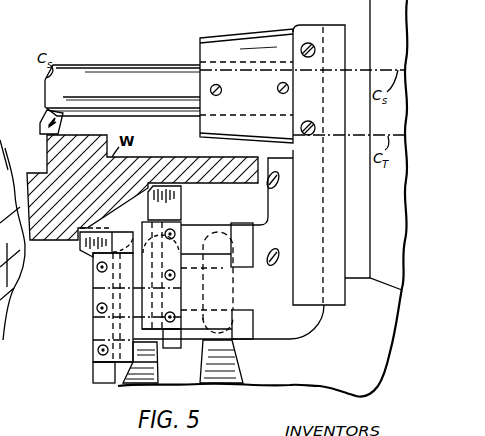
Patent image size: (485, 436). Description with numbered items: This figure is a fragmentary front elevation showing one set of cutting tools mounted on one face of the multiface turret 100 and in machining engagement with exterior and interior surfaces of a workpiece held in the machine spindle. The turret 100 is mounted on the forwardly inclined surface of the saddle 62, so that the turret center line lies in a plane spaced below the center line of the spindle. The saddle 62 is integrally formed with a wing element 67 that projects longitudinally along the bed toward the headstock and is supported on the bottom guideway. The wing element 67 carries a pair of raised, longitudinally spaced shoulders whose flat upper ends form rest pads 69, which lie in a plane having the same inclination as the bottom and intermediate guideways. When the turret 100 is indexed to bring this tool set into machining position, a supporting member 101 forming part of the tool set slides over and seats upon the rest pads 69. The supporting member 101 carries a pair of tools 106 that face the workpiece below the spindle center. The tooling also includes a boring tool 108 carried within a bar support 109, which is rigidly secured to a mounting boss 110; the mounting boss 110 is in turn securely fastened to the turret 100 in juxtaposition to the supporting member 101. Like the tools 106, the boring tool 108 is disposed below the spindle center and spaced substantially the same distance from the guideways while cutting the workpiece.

The saddle 62 is at (317, 382).
The wing element 67 is at (120, 388).
The rest pads 69 is at (235, 298).
The turret 100 is at (0, 357).
The supporting member 101 is at (92, 303).
The tools 106 is at (181, 213).
The boring tool 108 is at (40, 125).
The bar support 109 is at (143, 56).
The mounting boss 110 is at (263, 36).